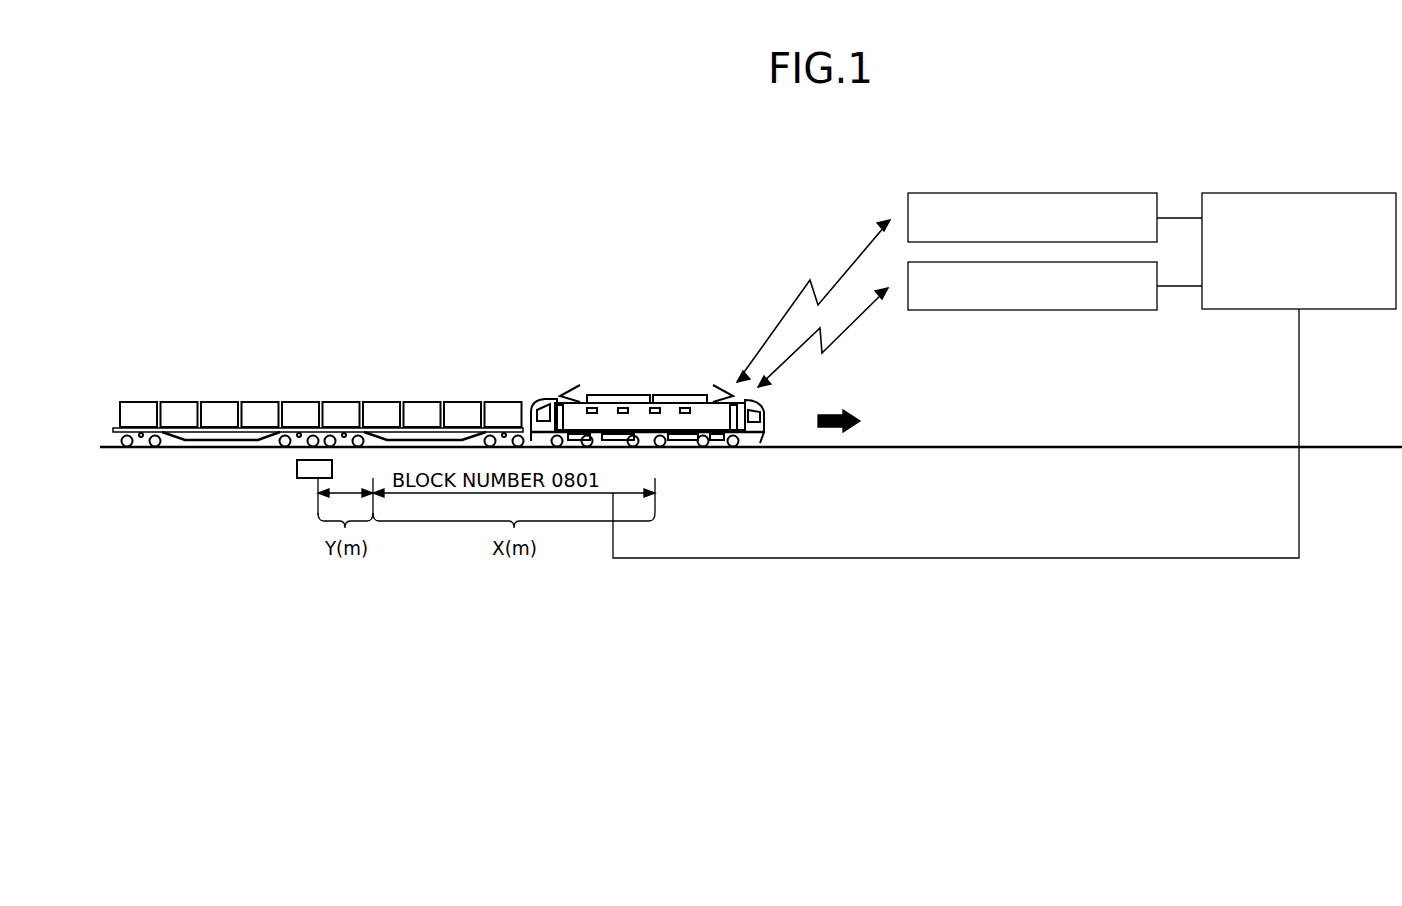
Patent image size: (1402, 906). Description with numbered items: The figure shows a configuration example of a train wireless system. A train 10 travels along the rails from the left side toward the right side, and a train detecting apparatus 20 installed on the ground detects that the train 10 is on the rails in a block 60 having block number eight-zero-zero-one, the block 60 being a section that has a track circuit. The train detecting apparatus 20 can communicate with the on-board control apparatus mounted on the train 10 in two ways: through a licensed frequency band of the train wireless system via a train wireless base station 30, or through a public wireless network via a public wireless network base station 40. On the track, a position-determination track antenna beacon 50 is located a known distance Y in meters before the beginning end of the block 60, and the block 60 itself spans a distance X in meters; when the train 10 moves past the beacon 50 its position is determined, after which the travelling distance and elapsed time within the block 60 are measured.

The train 10 is at (760, 400).
The train detecting apparatus 20 is at (1336, 180).
The train wireless base station 30 is at (1101, 180).
The public wireless network base station 40 is at (1099, 311).
The position-determination track antenna beacon 50 is at (303, 478).
The block 60 is at (622, 490).